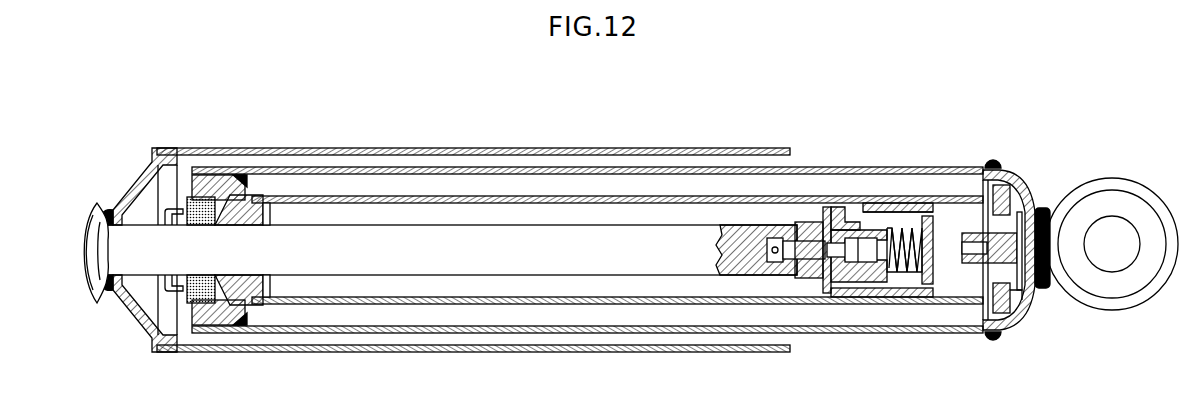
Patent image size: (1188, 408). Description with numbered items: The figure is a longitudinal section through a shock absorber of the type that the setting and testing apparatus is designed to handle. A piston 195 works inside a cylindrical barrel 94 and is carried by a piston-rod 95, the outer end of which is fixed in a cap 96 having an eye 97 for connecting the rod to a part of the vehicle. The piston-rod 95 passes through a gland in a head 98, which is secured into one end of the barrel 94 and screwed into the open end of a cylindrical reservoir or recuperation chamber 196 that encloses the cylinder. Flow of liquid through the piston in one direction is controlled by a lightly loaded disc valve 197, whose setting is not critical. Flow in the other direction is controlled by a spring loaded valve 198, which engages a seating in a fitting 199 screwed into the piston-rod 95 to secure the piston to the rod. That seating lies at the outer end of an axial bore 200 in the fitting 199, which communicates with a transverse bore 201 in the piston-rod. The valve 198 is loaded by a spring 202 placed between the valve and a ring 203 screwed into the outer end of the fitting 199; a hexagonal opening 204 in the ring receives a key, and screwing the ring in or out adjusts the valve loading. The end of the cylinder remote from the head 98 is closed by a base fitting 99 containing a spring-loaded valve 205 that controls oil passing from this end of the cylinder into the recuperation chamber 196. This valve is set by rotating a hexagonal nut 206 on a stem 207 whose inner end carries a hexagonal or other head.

The cylindrical barrel 94 is at (515, 300).
The piston-rod 95 is at (600, 255).
The cap 96 is at (133, 318).
The eye 97 is at (98, 287).
The head 98 is at (225, 307).
The base fitting 99 is at (1005, 197).
The piston 195 is at (872, 289).
The cylindrical reservoir or recuperation chamber 196 is at (677, 172).
The disc valve 197 is at (828, 291).
The spring loaded valve 198 is at (889, 230).
The fitting 199 is at (856, 226).
The axial bore 200 is at (834, 208).
The transverse bore 201 is at (800, 226).
The spring 202 is at (890, 276).
The ring 203 is at (932, 262).
The hexagonal opening 204 is at (965, 237).
The spring-loaded valve 205 is at (1020, 291).
The hexagonal nut 206 is at (982, 325).
The stem 207 is at (980, 228).